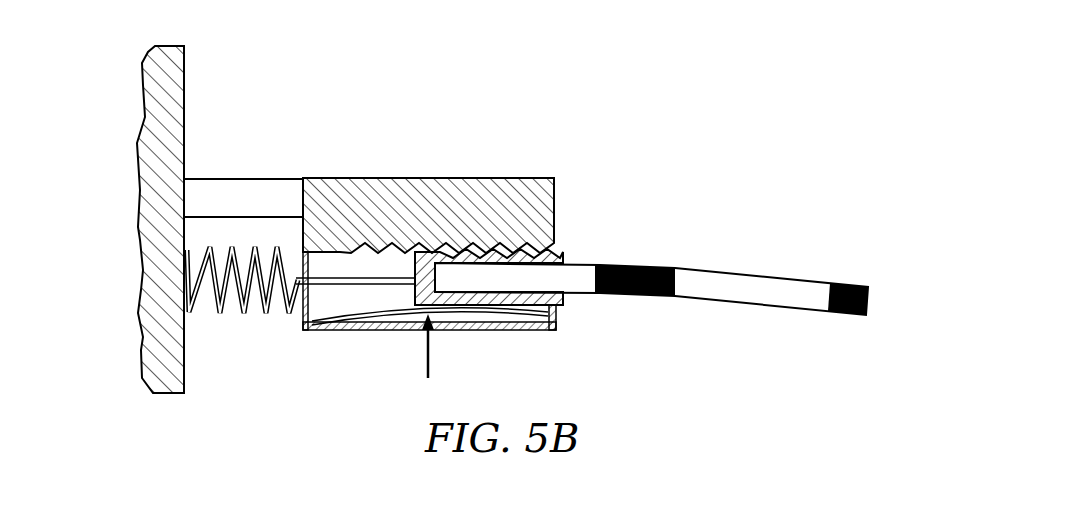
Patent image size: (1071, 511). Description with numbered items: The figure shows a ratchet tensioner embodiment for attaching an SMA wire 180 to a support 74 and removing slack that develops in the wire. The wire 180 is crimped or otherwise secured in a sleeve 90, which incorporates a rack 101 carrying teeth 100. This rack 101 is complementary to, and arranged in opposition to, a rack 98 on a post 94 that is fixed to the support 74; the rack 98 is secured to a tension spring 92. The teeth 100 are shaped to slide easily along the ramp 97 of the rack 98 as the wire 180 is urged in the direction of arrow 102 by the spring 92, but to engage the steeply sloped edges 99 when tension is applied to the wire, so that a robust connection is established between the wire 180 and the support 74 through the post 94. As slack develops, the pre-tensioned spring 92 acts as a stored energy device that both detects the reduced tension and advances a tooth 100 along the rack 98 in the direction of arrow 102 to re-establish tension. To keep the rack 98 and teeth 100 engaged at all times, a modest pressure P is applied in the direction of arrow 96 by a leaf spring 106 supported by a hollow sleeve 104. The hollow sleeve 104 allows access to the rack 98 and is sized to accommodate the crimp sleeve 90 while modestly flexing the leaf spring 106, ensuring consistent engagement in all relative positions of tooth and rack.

The support 74 is at (152, 118).
The tension spring 92 is at (220, 316).
The post 94 is at (437, 205).
The ramp 97 is at (357, 244).
The rack 98 is at (345, 262).
The steeply sloped edges 99 is at (382, 246).
The teeth 100 is at (492, 243).
The rack 101 is at (470, 236).
The sleeve 90 is at (562, 306).
The SMA wire 180 is at (721, 268).
The arrow 102 is at (668, 317).
The hollow sleeve 104 is at (322, 327).
The leaf spring 106 is at (507, 316).
The arrow 96 is at (430, 364).